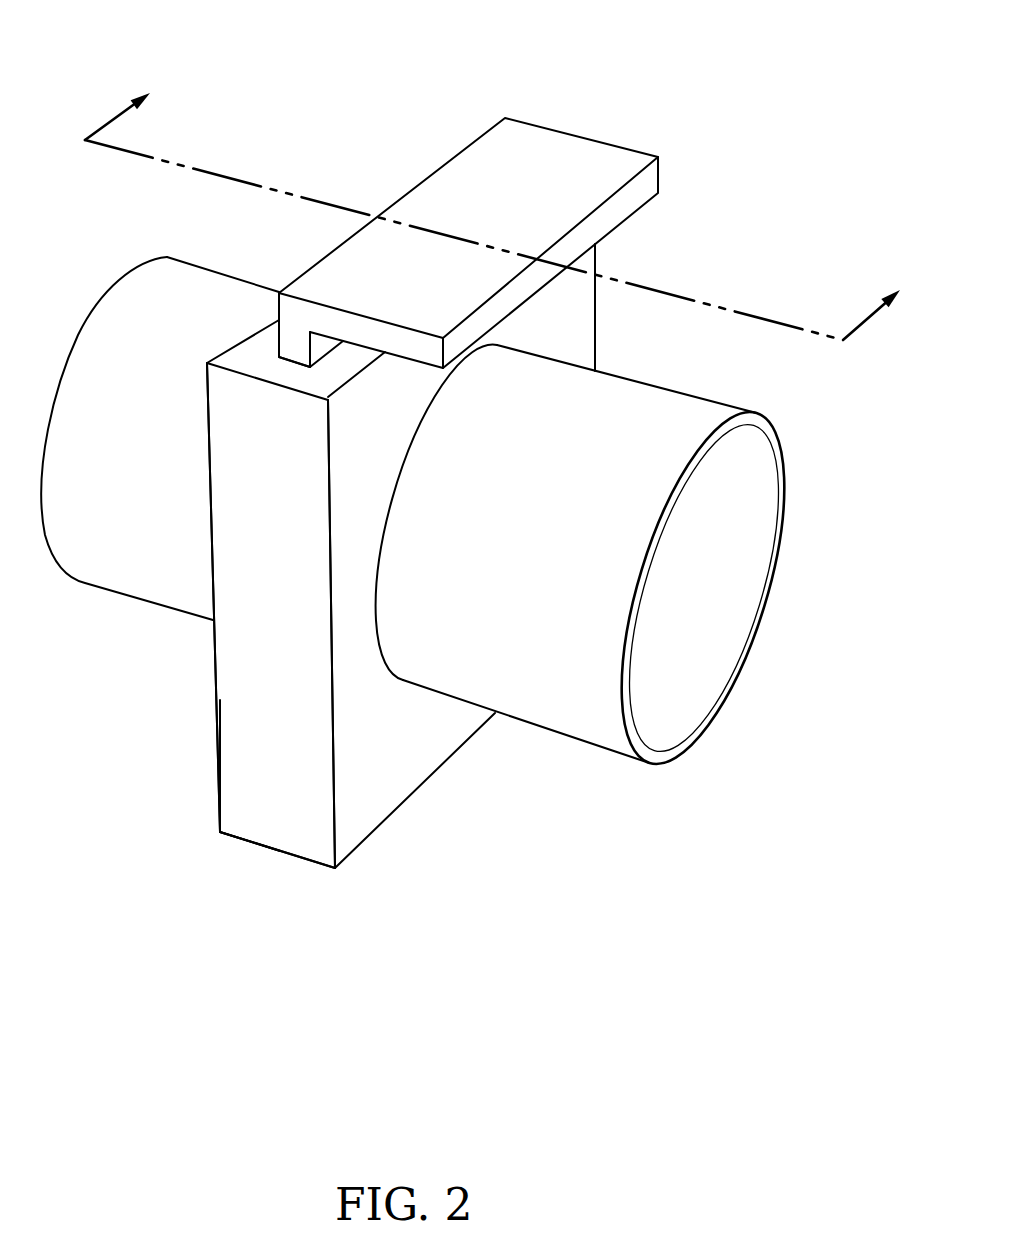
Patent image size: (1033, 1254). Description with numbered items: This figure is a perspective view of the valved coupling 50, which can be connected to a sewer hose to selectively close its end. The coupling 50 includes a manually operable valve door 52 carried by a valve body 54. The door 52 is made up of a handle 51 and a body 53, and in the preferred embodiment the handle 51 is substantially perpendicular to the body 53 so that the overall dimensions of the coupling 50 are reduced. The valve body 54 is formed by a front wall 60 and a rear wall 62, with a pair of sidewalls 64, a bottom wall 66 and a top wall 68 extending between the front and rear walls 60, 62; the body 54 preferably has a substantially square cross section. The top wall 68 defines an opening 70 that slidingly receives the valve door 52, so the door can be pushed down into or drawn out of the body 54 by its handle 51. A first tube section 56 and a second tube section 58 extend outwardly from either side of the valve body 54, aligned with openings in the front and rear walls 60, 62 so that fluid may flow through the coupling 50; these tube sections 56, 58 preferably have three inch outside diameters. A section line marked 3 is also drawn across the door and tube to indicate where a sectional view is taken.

The section line 3- 3 is at (502, 204).
The valved coupling 50 is at (480, 499).
The handle 51 is at (607, 167).
The valve door 52 is at (528, 152).
The body 53 is at (293, 335).
The valve body 54 is at (262, 695).
The first tube section 56 is at (618, 425).
The second tube section 58 is at (168, 269).
The front wall 60 is at (378, 788).
The rear wall 62 is at (215, 648).
The sidewalls 64 is at (265, 782).
The bottom wall 66 is at (302, 858).
The top wall 68 is at (268, 332).
The opening 70 is at (280, 358).